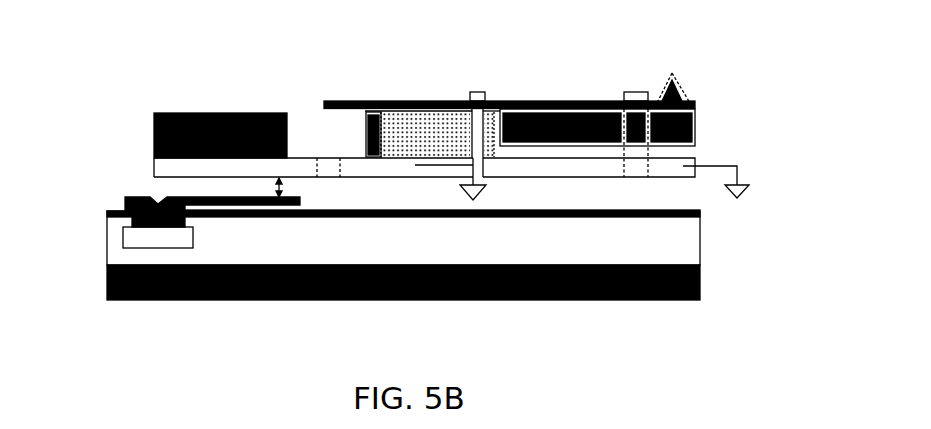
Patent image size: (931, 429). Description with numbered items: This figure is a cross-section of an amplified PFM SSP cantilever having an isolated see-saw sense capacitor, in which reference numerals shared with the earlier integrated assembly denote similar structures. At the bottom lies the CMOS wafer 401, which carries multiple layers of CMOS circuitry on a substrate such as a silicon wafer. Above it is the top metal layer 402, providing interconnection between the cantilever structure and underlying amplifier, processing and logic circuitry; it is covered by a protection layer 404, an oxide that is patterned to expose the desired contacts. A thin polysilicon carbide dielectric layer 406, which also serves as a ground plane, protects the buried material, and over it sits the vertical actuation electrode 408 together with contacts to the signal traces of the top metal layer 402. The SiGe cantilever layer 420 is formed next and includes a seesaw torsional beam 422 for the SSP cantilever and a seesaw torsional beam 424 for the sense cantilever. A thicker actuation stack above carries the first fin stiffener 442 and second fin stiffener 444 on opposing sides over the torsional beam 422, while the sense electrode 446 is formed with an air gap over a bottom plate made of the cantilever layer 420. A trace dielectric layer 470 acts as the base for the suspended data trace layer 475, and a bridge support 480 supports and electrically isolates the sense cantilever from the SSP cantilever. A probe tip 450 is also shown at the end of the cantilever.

The CMOS wafer 401 is at (329, 295).
The top metal layer 402 is at (122, 235).
The protection layer 404 is at (108, 250).
The dielectric layer 406 is at (107, 212).
The vertical actuation electrode 408 is at (124, 198).
The cantilever layer 420 is at (154, 170).
The seesaw torsional beam 422 is at (327, 163).
The seesaw torsional beam 424 is at (640, 168).
The first fin stiffener 442 is at (154, 128).
The second fin stiffener 444 is at (441, 143).
The sense electrode 446 is at (697, 128).
The contact tip 450 is at (673, 78).
The trace dielectric layer 470 is at (325, 106).
The suspended data trace layer 475 is at (365, 105).
The bridge support 480 is at (485, 92).